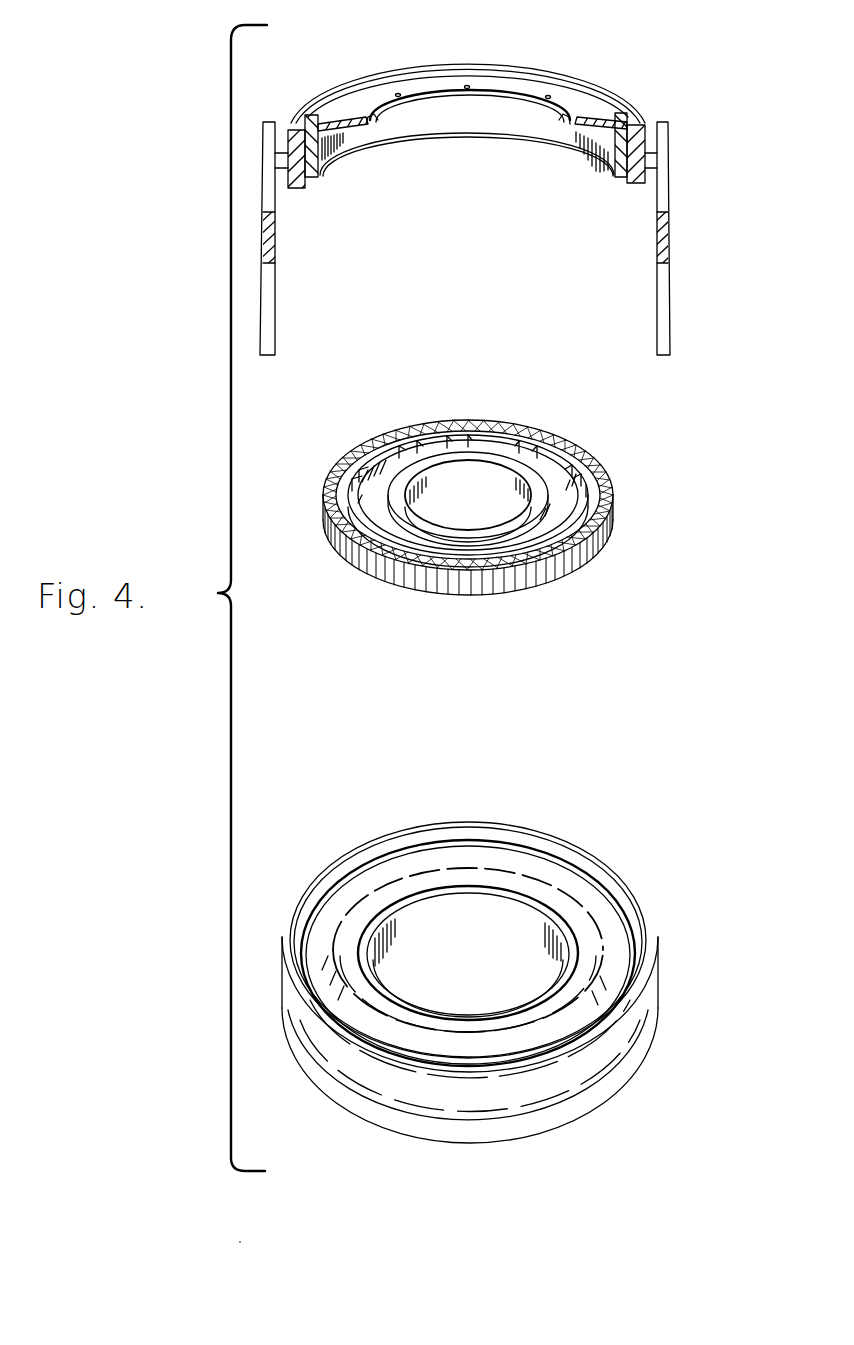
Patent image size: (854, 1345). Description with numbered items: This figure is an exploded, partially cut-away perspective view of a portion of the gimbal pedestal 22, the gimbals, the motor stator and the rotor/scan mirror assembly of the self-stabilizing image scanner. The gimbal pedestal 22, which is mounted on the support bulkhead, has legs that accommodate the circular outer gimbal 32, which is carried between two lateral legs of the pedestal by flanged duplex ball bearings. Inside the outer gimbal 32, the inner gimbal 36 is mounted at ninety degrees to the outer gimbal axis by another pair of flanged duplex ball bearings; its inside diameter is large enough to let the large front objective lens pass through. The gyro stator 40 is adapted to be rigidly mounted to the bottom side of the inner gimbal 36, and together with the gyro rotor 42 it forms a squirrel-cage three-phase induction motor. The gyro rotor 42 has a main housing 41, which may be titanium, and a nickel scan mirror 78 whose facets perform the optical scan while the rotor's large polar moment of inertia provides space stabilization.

The gimbal pedestal 22 is at (662, 195).
The outer gimbal 32 is at (637, 112).
The inner gimbal 36 is at (585, 98).
The gyro stator 40 is at (613, 507).
The main housing 41 is at (632, 920).
The gyro rotor 42 is at (498, 964).
The scan mirror 78 is at (645, 1043).